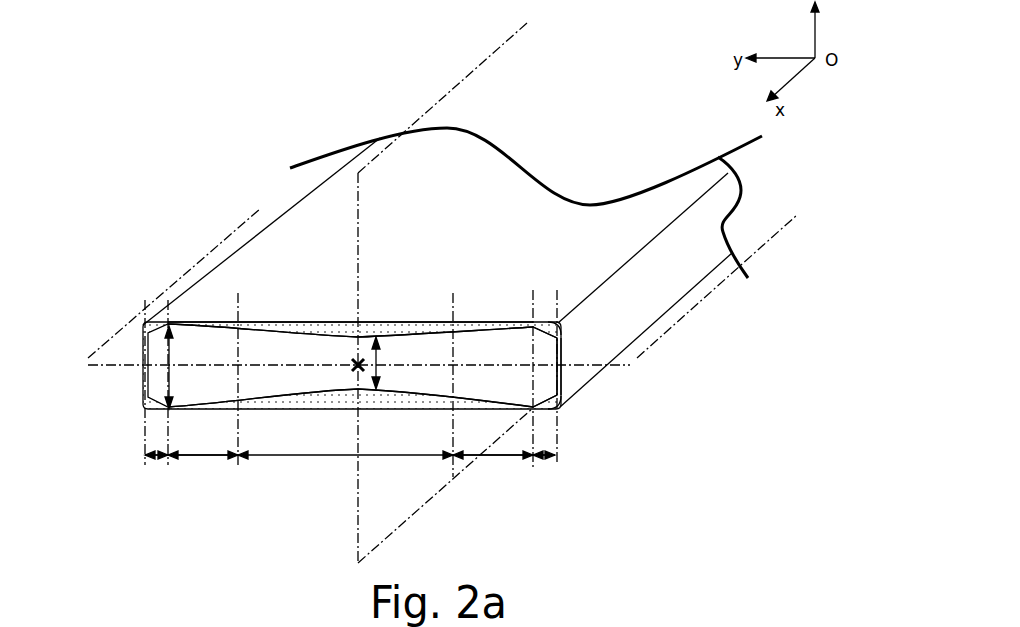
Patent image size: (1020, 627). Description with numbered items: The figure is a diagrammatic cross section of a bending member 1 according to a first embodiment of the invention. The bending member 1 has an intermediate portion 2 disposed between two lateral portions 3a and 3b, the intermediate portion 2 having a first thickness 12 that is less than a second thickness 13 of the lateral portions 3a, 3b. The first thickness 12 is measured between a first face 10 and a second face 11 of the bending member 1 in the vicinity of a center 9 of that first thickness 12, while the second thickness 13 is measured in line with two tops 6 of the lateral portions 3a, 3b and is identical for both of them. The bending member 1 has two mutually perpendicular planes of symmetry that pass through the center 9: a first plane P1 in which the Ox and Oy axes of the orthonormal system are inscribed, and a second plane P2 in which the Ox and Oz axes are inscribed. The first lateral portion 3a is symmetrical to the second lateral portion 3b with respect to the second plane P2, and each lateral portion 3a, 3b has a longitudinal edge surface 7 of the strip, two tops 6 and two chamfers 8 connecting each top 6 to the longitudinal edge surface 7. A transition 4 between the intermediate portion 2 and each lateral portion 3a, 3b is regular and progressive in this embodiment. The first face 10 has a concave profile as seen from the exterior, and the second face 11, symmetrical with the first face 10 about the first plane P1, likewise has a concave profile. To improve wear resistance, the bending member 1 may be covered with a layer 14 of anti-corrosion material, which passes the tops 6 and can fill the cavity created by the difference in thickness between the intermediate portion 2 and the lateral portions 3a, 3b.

The bending member 1 is at (194, 280).
The intermediate portion 2 is at (345, 458).
The first lateral portion 3a is at (545, 458).
The second lateral portion 3b is at (155, 458).
The transition 4 is at (203, 456).
The top 6 is at (558, 323).
The longitudinal edge surface 7 is at (563, 355).
The chamfer 8 is at (562, 330).
The center 9 is at (353, 362).
The first face 10 is at (405, 335).
The second face 11 is at (419, 395).
The first thickness 12 is at (373, 360).
The second thickness 13 is at (169, 343).
The layer 14 is at (379, 327).
The first plane of symmetry P1 is at (718, 288).
The second plane of symmetry P2 is at (375, 163).